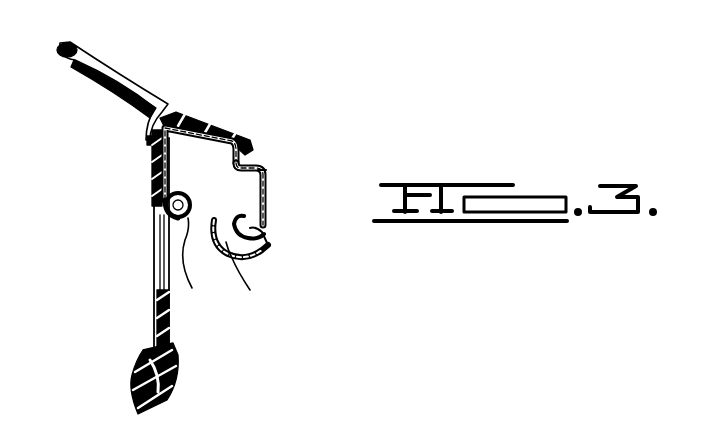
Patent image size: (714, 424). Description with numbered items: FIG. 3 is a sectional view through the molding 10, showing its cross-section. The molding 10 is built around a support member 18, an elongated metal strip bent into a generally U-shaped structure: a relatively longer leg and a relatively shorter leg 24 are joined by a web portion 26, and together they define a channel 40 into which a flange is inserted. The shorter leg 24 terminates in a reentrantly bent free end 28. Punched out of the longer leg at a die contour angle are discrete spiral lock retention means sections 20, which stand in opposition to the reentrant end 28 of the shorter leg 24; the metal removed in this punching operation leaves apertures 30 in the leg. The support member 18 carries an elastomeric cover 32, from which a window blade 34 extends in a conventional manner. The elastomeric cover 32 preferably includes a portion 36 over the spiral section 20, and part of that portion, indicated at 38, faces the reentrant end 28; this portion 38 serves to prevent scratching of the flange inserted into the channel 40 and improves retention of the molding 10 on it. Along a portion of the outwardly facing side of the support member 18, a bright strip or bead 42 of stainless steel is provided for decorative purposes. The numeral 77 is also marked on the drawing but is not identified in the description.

The molding 10 is at (110, 188).
The support member 18 is at (174, 328).
The spiral lock retention means sections 20 is at (197, 186).
The shorter leg 24 is at (268, 228).
The web portion 26 is at (192, 112).
The reentrantly bent free end 28 is at (248, 274).
The apertures 30 is at (148, 258).
The elastomeric cover 32 is at (150, 161).
The window blade 34 is at (128, 82).
The portion of elastomeric cover over spiral 36 is at (182, 194).
The portion facing reentrant end 38 is at (199, 262).
The channel 40 is at (185, 236).
The bright strip or bead 42 is at (264, 180).
The foot 77 is at (150, 326).